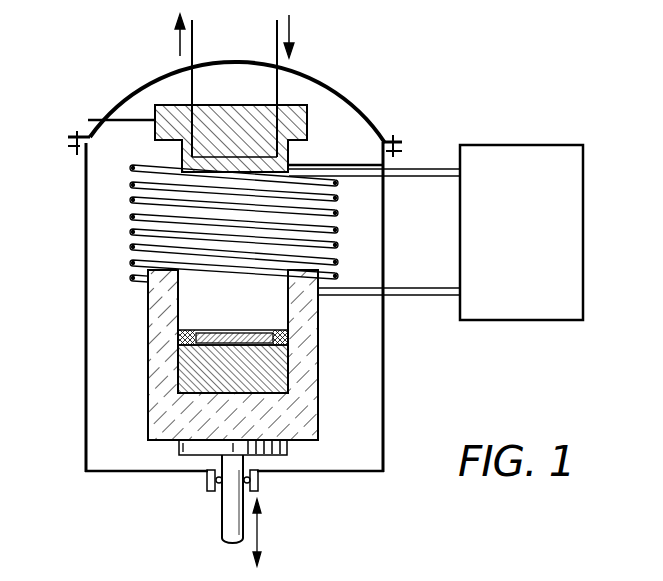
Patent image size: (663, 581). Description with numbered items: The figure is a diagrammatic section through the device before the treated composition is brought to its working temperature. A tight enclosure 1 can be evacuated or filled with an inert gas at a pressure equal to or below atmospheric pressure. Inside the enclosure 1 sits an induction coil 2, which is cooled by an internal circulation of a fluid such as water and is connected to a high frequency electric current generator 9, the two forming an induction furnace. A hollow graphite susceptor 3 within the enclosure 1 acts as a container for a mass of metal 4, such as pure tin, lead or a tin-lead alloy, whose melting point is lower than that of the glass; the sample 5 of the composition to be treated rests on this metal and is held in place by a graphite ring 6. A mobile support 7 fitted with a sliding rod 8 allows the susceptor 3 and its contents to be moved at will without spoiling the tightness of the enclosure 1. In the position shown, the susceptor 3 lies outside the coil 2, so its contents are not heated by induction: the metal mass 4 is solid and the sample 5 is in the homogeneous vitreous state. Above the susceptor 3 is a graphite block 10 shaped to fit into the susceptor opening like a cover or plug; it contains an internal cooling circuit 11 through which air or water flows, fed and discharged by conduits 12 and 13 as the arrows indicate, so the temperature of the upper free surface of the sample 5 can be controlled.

The tight enclosure 1 is at (84, 415).
The induction coil 2 is at (130, 232).
The hollow graphite susceptor 3 is at (150, 344).
The mass of metal 4 is at (270, 375).
The sample 5 is at (213, 332).
The graphite ring 6 is at (278, 330).
The mobile support 7 is at (280, 456).
The sliding rod 8 is at (232, 521).
The high frequency electric current generator 9 is at (508, 153).
The graphite block 10 is at (307, 133).
The internal cooling circuit 11 is at (222, 155).
The conduit 12 is at (278, 86).
The conduit 13 is at (192, 88).